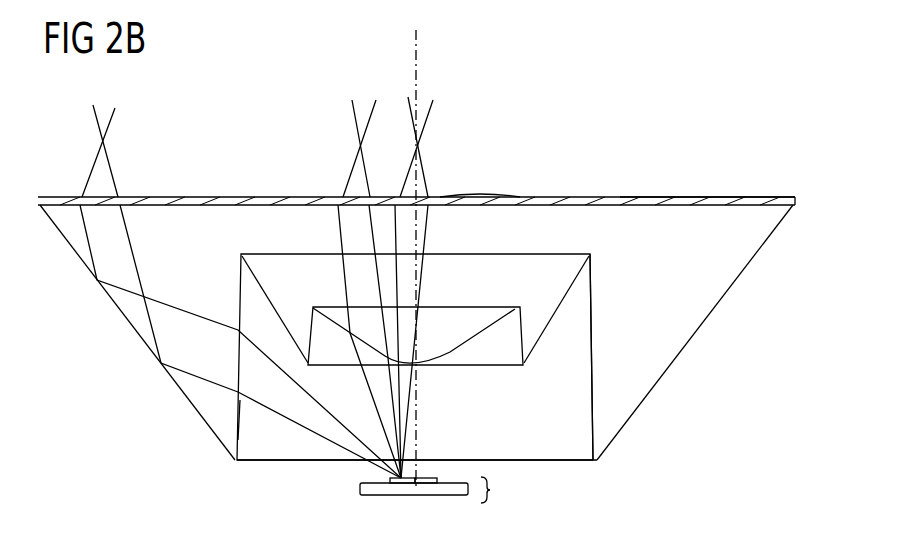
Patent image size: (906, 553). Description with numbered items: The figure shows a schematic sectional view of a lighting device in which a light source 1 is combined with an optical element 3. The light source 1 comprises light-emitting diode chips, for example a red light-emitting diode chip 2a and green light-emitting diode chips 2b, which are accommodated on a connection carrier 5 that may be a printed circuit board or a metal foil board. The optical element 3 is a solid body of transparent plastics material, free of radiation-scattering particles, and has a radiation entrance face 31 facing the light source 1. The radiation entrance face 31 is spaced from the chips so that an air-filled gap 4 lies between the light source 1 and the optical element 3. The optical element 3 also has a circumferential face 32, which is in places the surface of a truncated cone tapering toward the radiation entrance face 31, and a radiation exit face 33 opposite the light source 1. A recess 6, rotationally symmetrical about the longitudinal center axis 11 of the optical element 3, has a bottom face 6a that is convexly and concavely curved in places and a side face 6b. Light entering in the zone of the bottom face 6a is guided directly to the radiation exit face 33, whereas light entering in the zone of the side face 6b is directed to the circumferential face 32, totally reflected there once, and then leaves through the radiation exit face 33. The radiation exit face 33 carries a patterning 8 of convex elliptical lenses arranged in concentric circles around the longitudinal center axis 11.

The light source 1 is at (492, 488).
The red light-emitting diode chip 2a is at (402, 497).
The green light-emitting diode chip 2b is at (432, 497).
The optical element 3 is at (192, 222).
The gap 4 is at (462, 466).
The connection carrier 5 is at (362, 488).
The recess 6 is at (415, 357).
The bottom face of the recess 6a is at (335, 323).
The side face of the recess 6b is at (590, 388).
The patterning 8 is at (474, 200).
The longitudinal center axis 11 is at (418, 47).
The radiation entrance face 31 is at (495, 327).
The circumferential face 32 is at (683, 366).
The radiation exit face 33 is at (667, 198).